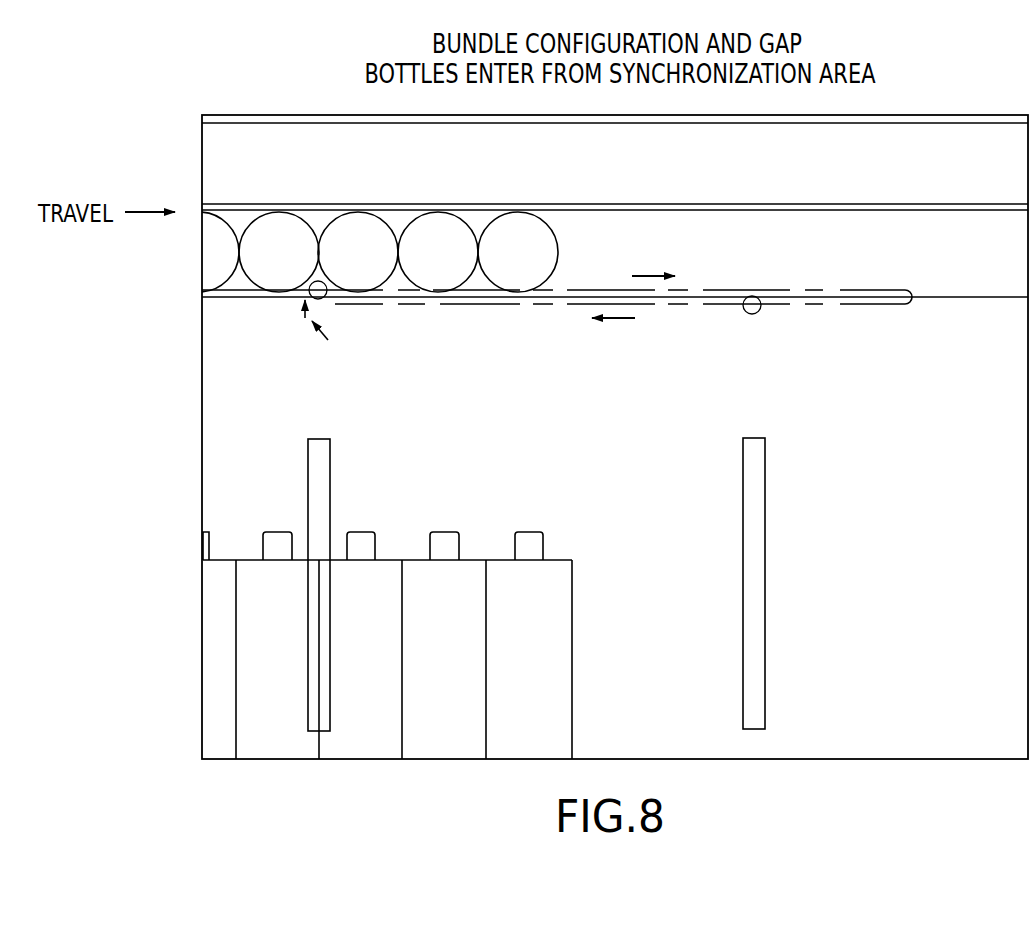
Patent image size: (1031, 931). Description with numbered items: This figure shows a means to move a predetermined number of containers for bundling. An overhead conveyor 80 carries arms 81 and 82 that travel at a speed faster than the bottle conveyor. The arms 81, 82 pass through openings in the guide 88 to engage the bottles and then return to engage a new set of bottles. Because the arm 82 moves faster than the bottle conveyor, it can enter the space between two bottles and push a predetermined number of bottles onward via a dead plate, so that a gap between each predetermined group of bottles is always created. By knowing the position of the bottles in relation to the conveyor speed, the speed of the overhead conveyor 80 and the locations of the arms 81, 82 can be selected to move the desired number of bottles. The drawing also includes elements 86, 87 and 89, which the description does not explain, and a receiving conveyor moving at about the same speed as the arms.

The overhead conveyor 80 is at (825, 308).
The arm 81 is at (750, 318).
The arm 82 is at (330, 299).
The gate 86 is at (309, 276).
The swing rail end 87 is at (910, 289).
The guide 88 is at (243, 300).
The upper guide rail 89 is at (235, 203).